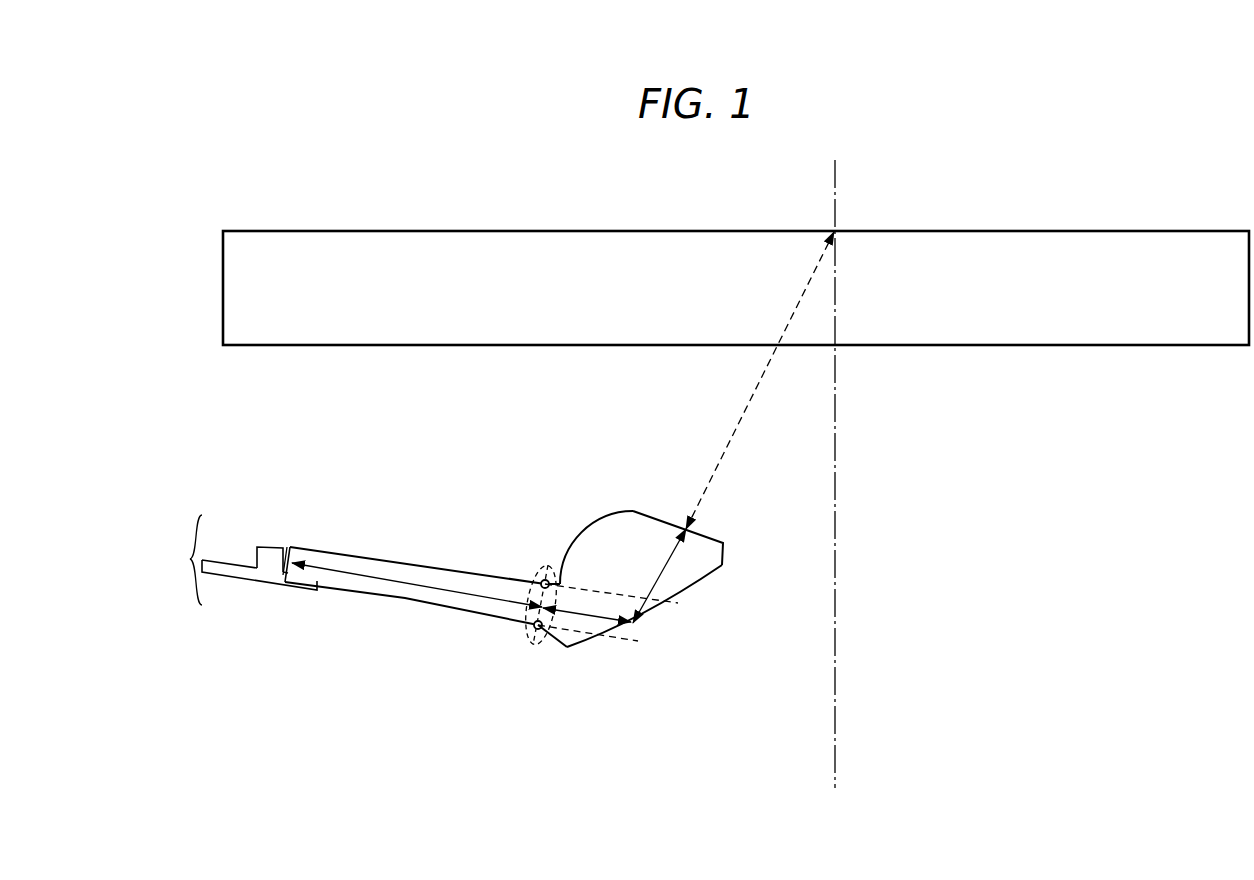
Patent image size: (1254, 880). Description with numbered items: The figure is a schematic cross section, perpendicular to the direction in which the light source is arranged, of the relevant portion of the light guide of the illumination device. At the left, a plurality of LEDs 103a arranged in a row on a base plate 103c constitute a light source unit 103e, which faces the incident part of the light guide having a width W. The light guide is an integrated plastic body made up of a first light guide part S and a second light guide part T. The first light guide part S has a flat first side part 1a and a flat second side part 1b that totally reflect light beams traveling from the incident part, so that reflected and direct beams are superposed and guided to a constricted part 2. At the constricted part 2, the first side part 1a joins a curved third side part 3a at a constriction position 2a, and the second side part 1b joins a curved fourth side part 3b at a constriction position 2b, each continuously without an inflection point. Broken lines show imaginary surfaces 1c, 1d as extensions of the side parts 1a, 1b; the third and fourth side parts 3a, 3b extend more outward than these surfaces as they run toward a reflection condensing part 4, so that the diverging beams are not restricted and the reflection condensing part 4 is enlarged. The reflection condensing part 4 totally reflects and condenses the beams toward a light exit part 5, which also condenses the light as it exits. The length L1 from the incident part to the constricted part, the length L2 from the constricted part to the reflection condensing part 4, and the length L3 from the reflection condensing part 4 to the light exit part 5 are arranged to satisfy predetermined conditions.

The first side part 1a is at (398, 562).
The second side part 1b is at (401, 598).
The imaginary surface 1c is at (677, 603).
The imaginary surface 1d is at (627, 641).
The constricted part 2 is at (534, 576).
The constriction position 2a is at (546, 580).
The constriction position 2b is at (528, 632).
The third side part 3a is at (565, 581).
The fourth side part 3b is at (548, 636).
The reflection condensing part 4 is at (648, 616).
The light exit part 5 is at (716, 540).
The LED 103a is at (265, 552).
The base plate 103c is at (300, 587).
The light source unit 103e is at (253, 570).
The width of incident part W is at (279, 604).
The length from incident part to constricted part L1 is at (362, 576).
The length from constricted part to reflection condensing part L2 is at (583, 614).
The length from reflection condensing part to light exit part L3 is at (668, 568).
The first light guide part S is at (462, 628).
The second light guide part T is at (608, 650).